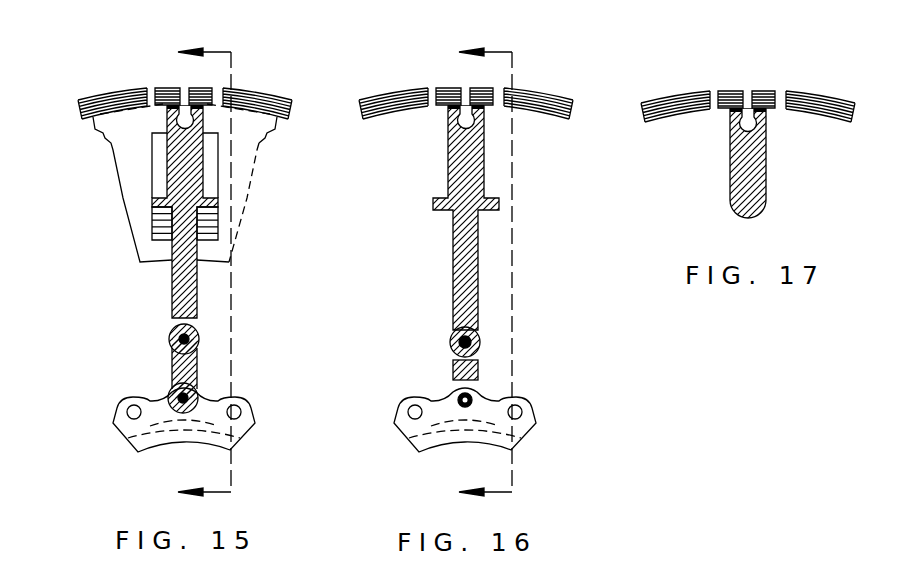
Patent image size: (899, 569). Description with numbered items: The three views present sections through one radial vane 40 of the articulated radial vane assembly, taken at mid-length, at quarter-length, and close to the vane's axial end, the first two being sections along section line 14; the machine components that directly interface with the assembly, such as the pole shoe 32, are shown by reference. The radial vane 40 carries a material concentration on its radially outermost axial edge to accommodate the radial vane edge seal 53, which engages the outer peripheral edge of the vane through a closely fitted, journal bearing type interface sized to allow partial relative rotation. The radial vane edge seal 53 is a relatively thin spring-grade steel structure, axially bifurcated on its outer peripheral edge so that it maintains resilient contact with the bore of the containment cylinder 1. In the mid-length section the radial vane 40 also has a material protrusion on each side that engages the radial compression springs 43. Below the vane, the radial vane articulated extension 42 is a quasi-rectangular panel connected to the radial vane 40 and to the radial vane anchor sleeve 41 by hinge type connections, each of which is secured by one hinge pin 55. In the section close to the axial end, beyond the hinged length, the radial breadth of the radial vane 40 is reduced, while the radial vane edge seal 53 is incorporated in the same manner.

In FIG. 15, the containment cylinder 1 is at (168, 92).
In FIG. 16, the containment cylinder 1 is at (450, 92).
In FIG. 17, the containment cylinder 1 is at (735, 95).
In FIG. 15, the section line of FIG. 14 view 14 is at (204, 259).
In FIG. 16, the section line of FIG. 14 view 14 is at (485, 259).
In FIG. 15, the pole shoe (reference) 32 is at (110, 157).
In FIG. 15, the radial vane 40 is at (168, 152).
In FIG. 16, the radial vane 40 is at (450, 177).
In FIG. 17, the radial vane 40 is at (730, 182).
In FIG. 15, the radial vane anchor sleeve 41 is at (125, 398).
In FIG. 16, the radial vane anchor sleeve 41 is at (522, 403).
In FIG. 15, the radial vane articulated extension 42 is at (175, 333).
In FIG. 16, the radial vane articulated extension 42 is at (453, 356).
In FIG. 15, the radial compression springs 43 is at (152, 215).
In FIG. 15, the radial vane edge seal 53 is at (208, 107).
In FIG. 16, the radial vane edge seal 53 is at (488, 107).
In FIG. 17, the radial vane edge seal 53 is at (772, 108).
In FIG. 15, the hinge pin 55 is at (192, 392).
In FIG. 16, the hinge pin 55 is at (470, 393).